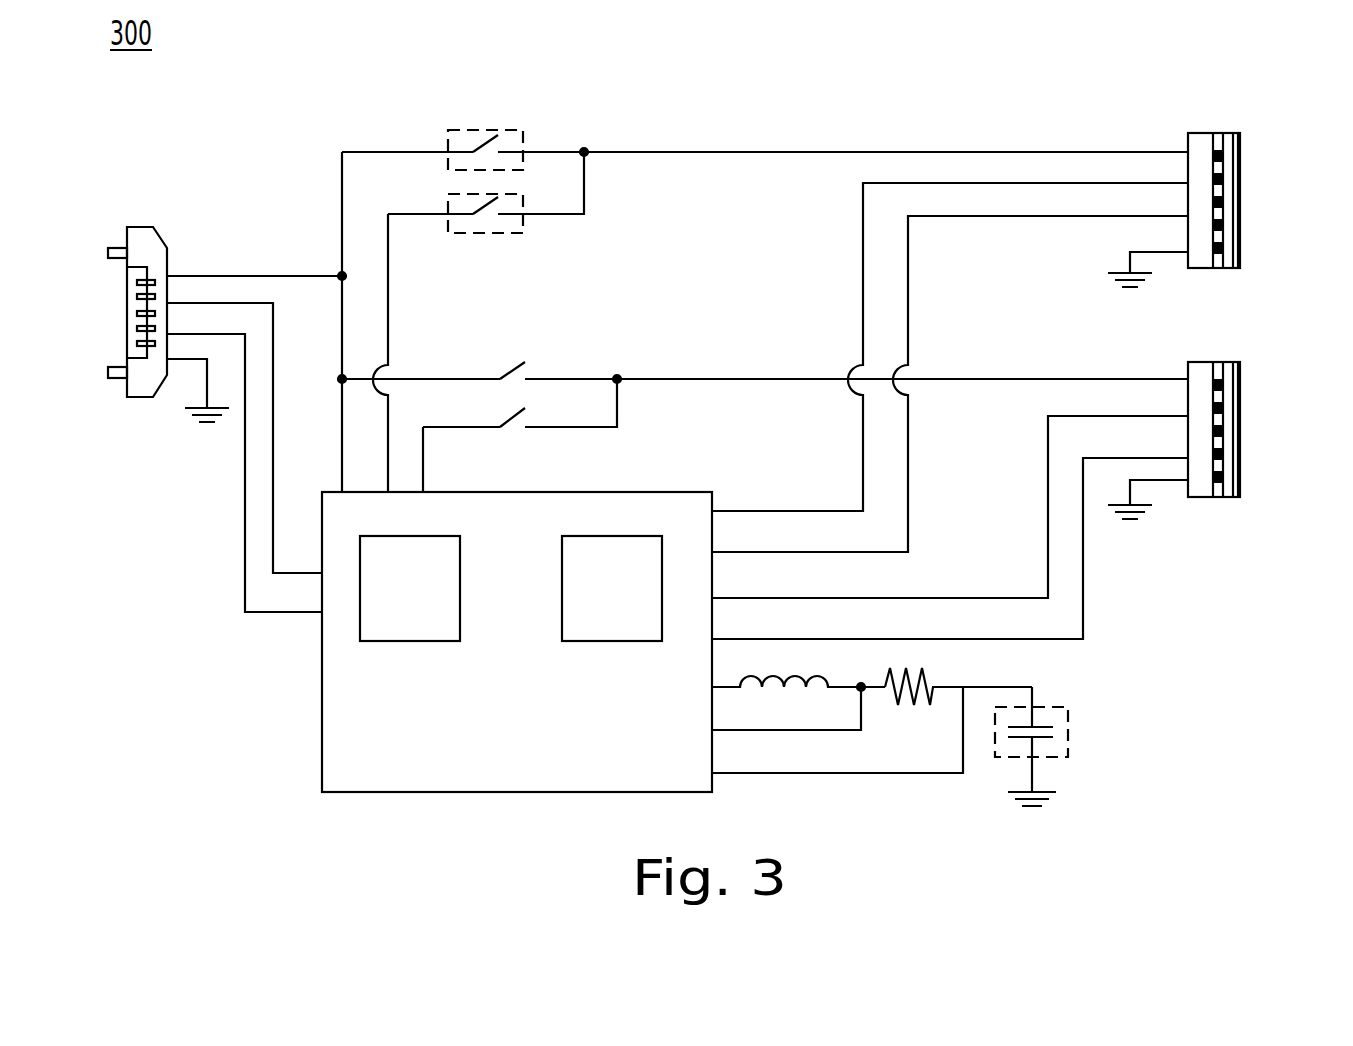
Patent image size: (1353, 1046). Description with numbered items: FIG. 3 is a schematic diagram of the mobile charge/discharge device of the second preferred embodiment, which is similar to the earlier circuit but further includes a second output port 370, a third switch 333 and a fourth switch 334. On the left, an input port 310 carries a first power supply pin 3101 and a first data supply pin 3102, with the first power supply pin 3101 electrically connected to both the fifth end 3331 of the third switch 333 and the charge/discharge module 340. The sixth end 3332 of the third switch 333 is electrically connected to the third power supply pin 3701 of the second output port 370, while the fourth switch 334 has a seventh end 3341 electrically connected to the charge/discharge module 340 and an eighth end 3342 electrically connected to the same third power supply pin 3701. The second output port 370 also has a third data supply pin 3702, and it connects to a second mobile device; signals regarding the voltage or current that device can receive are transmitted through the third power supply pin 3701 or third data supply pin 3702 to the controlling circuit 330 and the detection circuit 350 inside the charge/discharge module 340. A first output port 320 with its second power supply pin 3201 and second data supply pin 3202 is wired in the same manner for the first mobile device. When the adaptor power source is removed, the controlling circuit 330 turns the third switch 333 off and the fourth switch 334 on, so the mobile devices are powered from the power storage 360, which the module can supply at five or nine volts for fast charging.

The input port 310 is at (137, 397).
The first power supply pin 3101 is at (168, 272).
The first data supply pin 3102 is at (167, 303).
The first output port 320 is at (1240, 398).
The second power supply pin 3201 is at (1188, 379).
The second data supply pin 3202 is at (1188, 416).
The controlling circuit 330 is at (443, 536).
The third switch 333 is at (473, 130).
The fifth end 3331 is at (448, 152).
The sixth end 3332 is at (523, 152).
The fourth switch 334 is at (473, 233).
The seventh end 3341 is at (448, 214).
The eighth end 3342 is at (523, 214).
The charge/discharge module 340 is at (322, 698).
The detection circuit 350 is at (642, 536).
The power storage 360 is at (1068, 727).
The second output port 370 is at (1240, 170).
The third power supply pin 3701 is at (1188, 152).
The third data supply pin 3702 is at (1188, 183).